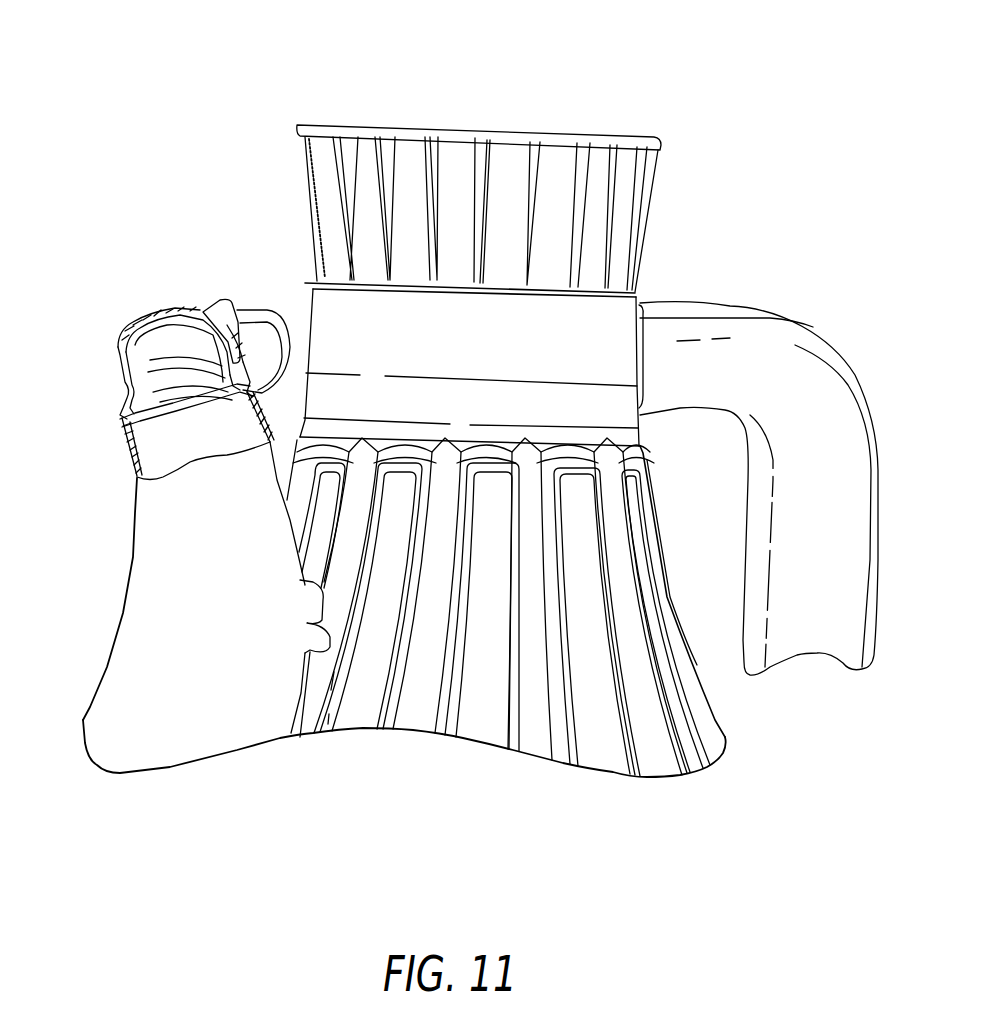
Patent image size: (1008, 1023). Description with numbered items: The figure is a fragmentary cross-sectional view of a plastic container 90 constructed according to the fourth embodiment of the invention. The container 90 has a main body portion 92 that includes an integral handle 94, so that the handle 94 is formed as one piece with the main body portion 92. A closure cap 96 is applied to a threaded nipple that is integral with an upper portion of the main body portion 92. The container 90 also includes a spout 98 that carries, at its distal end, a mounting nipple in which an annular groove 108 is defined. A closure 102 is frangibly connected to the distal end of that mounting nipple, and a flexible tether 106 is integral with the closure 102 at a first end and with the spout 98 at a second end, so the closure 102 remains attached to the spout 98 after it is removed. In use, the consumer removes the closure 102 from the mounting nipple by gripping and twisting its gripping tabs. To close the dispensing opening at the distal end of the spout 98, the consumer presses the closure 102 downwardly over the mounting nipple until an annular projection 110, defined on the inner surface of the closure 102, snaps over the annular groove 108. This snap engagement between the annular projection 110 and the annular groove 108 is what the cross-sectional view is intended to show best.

The container 90 is at (796, 220).
The main body portion 92 is at (614, 755).
The integral handle 94 is at (810, 390).
The closure cap 96 is at (511, 130).
The spout 98 is at (137, 465).
The closure 102 is at (167, 312).
The flexible tether 106 is at (270, 312).
The annular groove 108 is at (137, 432).
The annular projection 110 is at (128, 405).